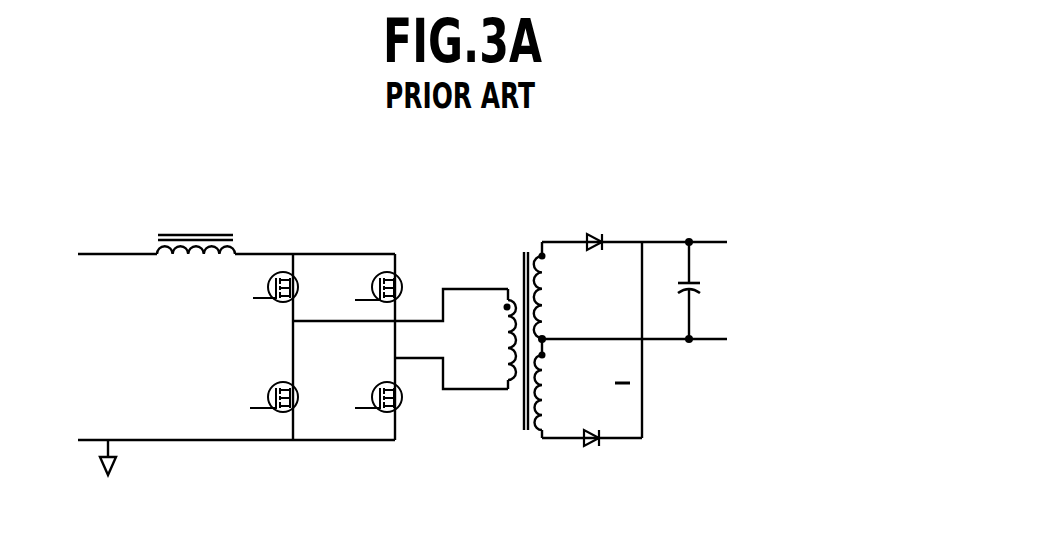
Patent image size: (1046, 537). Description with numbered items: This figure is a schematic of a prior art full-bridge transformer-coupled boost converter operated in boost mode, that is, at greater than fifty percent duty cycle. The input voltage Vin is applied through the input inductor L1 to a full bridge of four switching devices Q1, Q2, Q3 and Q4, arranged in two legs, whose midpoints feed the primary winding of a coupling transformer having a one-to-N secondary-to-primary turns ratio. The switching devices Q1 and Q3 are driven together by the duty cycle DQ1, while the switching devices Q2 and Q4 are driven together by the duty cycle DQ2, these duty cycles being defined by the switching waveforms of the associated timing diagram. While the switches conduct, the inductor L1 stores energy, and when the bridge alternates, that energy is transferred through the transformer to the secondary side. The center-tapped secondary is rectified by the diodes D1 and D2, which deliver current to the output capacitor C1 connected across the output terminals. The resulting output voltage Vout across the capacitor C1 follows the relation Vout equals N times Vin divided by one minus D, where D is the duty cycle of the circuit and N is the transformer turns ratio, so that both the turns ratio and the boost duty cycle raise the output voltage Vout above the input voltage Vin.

The input inductor L1 is at (196, 224).
The switching device Q1 is at (394, 413).
The switching device Q2 is at (289, 413).
The switching device Q3 is at (293, 298).
The switching device Q4 is at (395, 299).
The duty cycle DQ1 is at (276, 342).
The duty cycle DQ2 is at (271, 341).
The output rectifier diode D1 is at (602, 219).
The output rectifier diode D2 is at (597, 460).
The output capacitor C1 is at (703, 290).
The input voltage Vin is at (76, 347).
The output voltage Vout is at (912, 295).